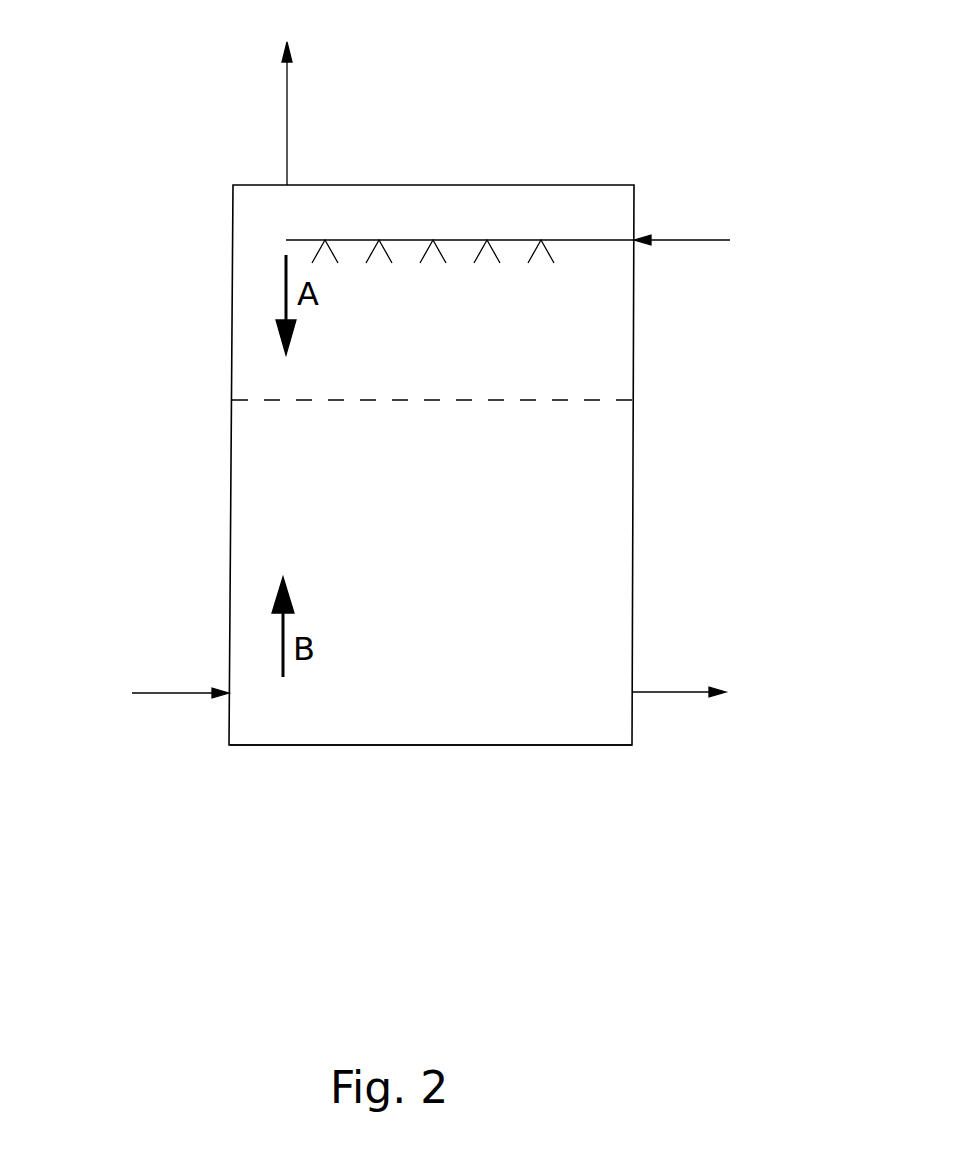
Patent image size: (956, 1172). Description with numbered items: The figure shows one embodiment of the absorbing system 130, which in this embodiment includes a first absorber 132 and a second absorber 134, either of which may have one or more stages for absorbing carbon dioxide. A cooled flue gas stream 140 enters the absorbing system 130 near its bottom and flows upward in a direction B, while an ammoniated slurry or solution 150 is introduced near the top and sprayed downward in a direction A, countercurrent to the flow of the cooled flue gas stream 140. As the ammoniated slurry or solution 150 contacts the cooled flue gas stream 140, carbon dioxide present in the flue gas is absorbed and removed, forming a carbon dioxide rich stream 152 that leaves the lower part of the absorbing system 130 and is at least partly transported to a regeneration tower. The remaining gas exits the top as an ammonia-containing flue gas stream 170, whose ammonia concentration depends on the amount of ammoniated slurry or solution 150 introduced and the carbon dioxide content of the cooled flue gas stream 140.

The absorbing system 130 is at (412, 864).
The first absorber 132 is at (627, 375).
The second absorber 134 is at (625, 550).
The cooled flue gas stream 140 is at (172, 693).
The ammoniated slurry or solution 150 is at (682, 240).
The CO2 rich stream 152 is at (677, 692).
The ammonia-containing flue gas stream 170 is at (287, 90).